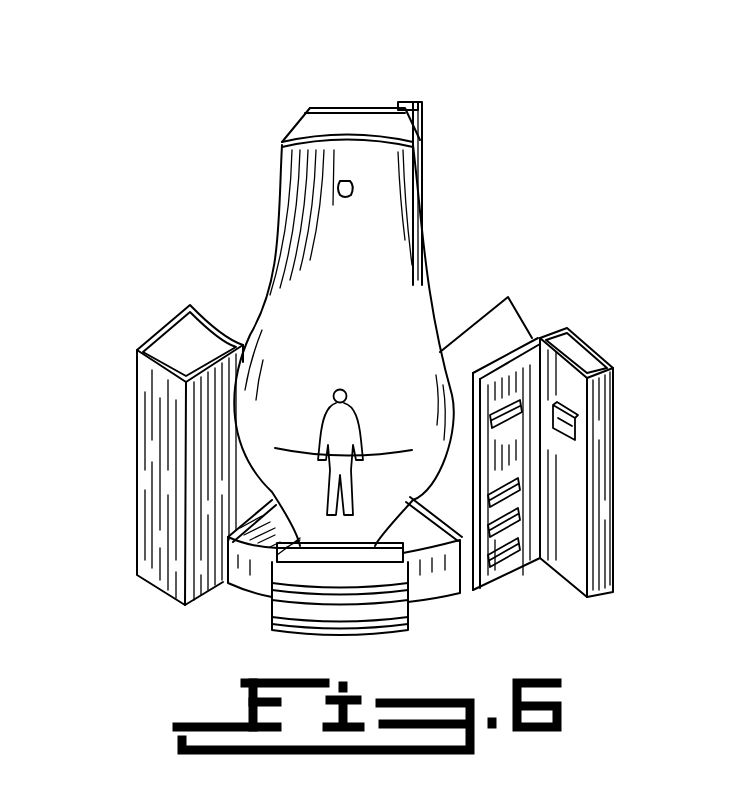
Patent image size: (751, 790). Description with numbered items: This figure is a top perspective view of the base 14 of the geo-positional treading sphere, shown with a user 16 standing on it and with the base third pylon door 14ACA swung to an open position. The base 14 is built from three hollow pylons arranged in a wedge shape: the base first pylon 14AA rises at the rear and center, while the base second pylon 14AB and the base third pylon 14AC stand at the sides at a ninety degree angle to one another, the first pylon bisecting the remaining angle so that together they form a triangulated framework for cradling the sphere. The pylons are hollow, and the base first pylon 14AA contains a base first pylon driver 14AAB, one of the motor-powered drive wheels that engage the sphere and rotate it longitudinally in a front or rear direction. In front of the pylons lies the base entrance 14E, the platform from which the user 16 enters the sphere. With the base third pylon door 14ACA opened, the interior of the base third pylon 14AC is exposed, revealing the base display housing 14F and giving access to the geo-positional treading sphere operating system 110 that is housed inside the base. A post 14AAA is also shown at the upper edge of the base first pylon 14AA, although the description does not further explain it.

The base 14 is at (277, 74).
The base first pylon 14AA is at (345, 122).
The vertical post of housing 14AAA is at (420, 118).
The base first pylon driver 14AAB is at (352, 185).
The base second pylon 14AB is at (187, 338).
The base third pylon 14AC is at (530, 313).
The base third pylon door 14ACA is at (572, 358).
The base entrance 14E is at (393, 575).
The base display housing 14F is at (577, 436).
The user 16 is at (350, 406).
The geo-positional treading sphere operating system 110 is at (520, 518).